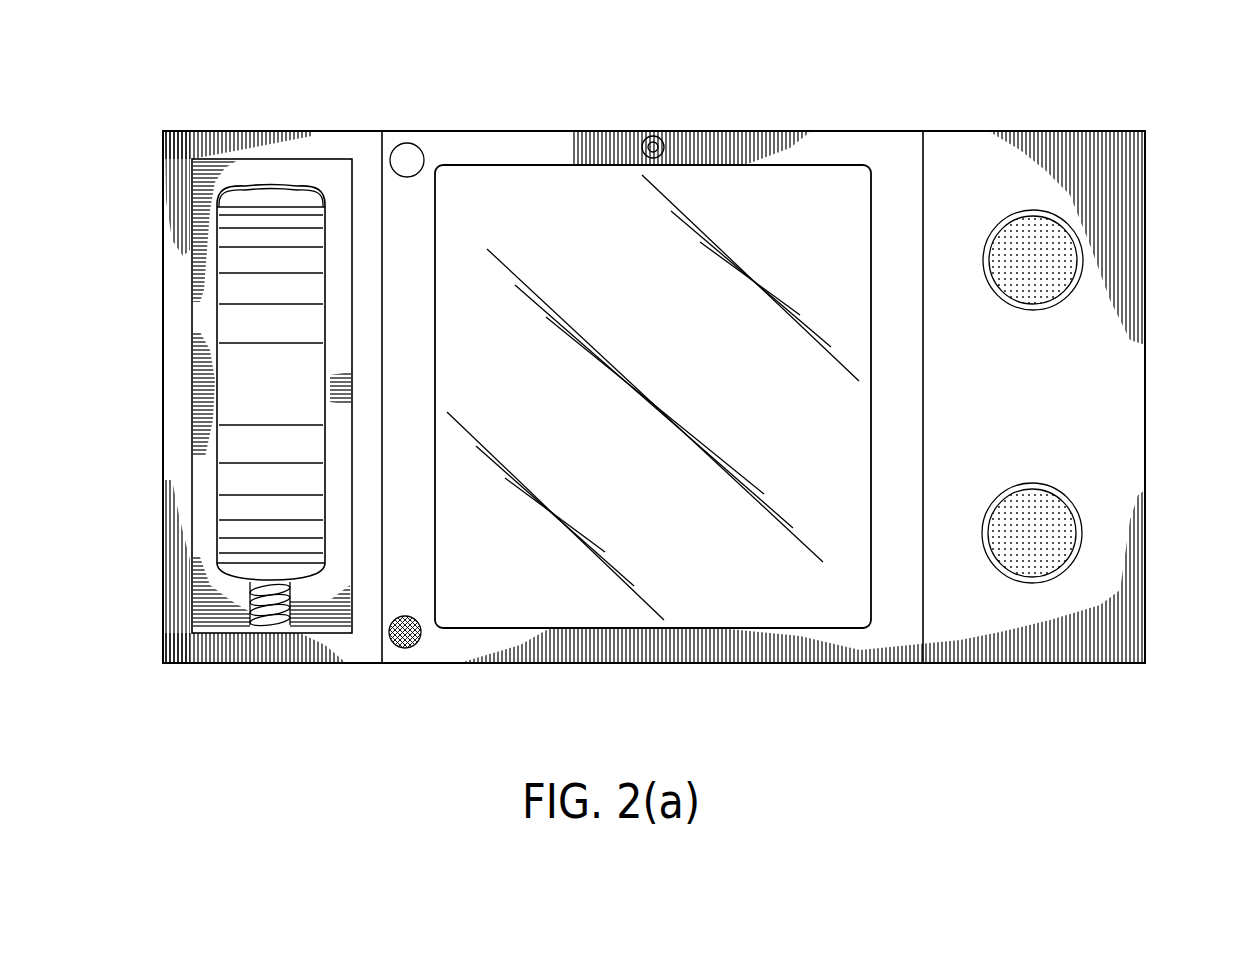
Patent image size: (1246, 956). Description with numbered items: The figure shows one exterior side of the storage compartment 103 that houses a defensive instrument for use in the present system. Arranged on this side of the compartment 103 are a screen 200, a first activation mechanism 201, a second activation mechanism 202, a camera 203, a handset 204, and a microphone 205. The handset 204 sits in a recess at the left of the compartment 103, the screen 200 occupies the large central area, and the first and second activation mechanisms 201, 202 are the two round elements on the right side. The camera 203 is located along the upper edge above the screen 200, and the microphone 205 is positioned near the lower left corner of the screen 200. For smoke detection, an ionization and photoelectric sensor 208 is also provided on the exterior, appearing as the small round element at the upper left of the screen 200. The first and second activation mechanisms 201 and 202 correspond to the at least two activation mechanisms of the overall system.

The storage compartment 103 is at (238, 722).
The screen 200 is at (643, 461).
The first activation mechanism 201 is at (1058, 533).
The second activation mechanism 202 is at (1052, 258).
The camera 203 is at (653, 147).
The handset 204 is at (294, 382).
The microphone 205 is at (403, 648).
The ionization and photoelectric sensor 208 is at (410, 158).